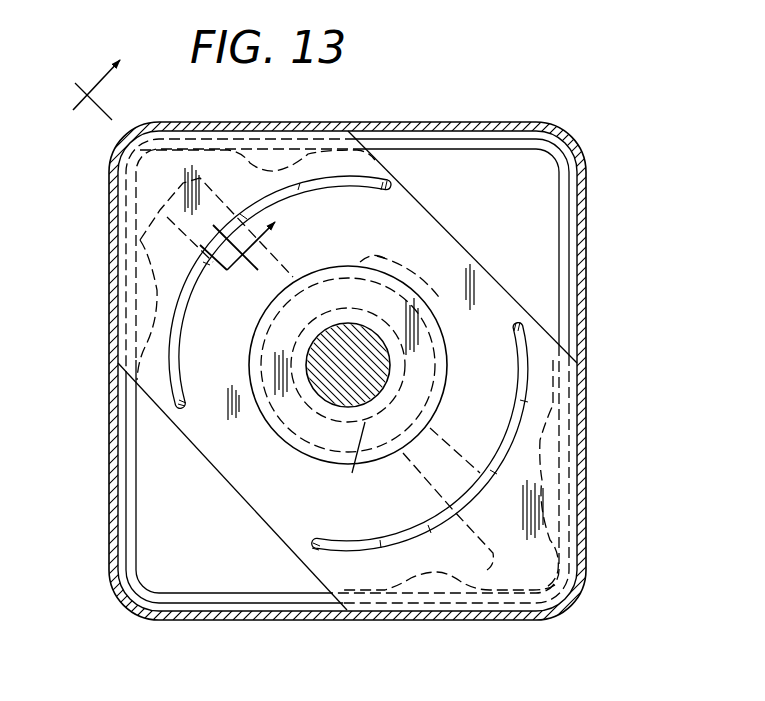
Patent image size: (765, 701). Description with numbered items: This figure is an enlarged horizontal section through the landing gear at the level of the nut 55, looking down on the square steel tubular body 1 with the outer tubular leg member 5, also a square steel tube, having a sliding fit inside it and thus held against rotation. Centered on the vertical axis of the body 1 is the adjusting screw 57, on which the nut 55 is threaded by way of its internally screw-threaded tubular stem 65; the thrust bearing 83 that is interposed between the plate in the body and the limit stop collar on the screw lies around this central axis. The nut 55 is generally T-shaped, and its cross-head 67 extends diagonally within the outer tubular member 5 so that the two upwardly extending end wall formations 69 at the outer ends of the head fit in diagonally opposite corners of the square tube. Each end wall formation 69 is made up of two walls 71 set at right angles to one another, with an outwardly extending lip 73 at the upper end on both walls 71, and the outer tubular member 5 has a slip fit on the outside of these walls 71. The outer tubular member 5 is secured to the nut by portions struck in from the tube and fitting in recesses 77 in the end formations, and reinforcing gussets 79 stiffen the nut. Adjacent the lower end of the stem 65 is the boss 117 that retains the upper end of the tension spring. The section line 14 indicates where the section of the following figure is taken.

The body 1 is at (590, 167).
The outer tubular leg member 5 is at (563, 253).
The section line 14- 14 is at (175, 165).
The nut 55 is at (256, 508).
The adjusting screw 57 is at (319, 396).
The tubular stem 65 is at (353, 478).
The cross-head 67 is at (404, 198).
The end wall formations 69 is at (183, 381).
The walls 71 is at (318, 143).
The lip 73 is at (253, 123).
The recesses 77 is at (153, 167).
The reinforcing gussets 79 is at (204, 316).
The thrust bearing 83 is at (343, 463).
The boss 117 is at (420, 263).